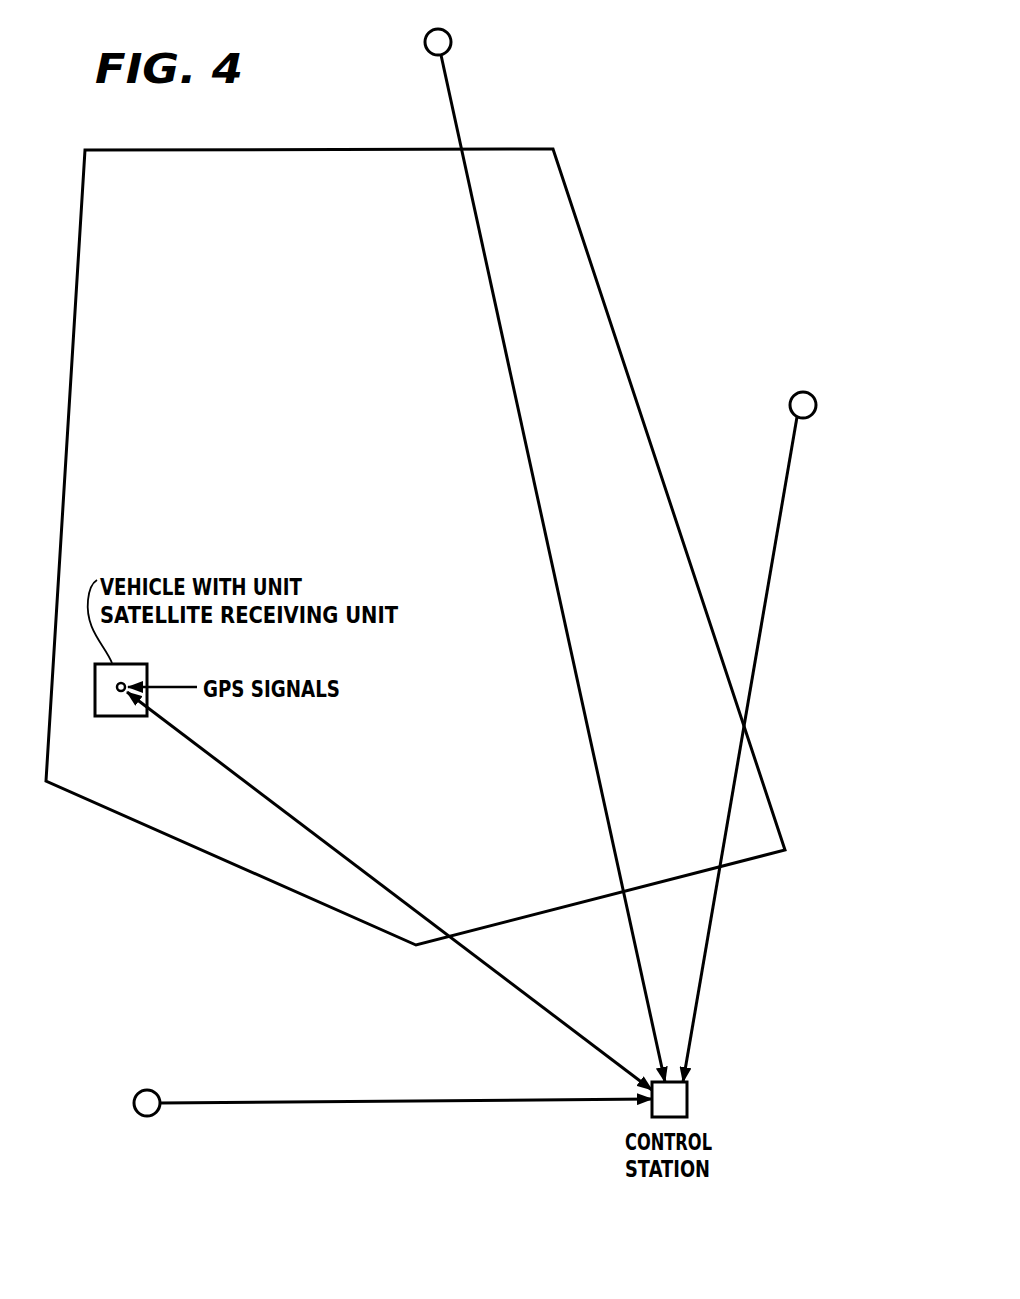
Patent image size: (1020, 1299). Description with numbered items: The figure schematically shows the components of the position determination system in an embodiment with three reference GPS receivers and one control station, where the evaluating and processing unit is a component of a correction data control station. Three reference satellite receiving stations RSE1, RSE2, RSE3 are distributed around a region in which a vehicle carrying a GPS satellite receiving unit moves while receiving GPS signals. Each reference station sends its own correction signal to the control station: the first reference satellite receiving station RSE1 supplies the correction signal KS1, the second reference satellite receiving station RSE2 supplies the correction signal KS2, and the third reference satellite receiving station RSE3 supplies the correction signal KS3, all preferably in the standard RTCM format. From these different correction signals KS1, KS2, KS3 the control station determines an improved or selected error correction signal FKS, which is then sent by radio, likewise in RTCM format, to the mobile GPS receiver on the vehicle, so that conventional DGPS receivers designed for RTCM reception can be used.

The reference satellite receiving station RSE1 is at (450, 28).
The reference satellite receiving station RSE2 is at (806, 389).
The reference satellite receiving station RSE3 is at (159, 1121).
The correction signal KS1 is at (507, 345).
The correction signal KS2 is at (760, 647).
The correction signal KS3 is at (380, 1103).
The error correction signal FKS is at (307, 830).